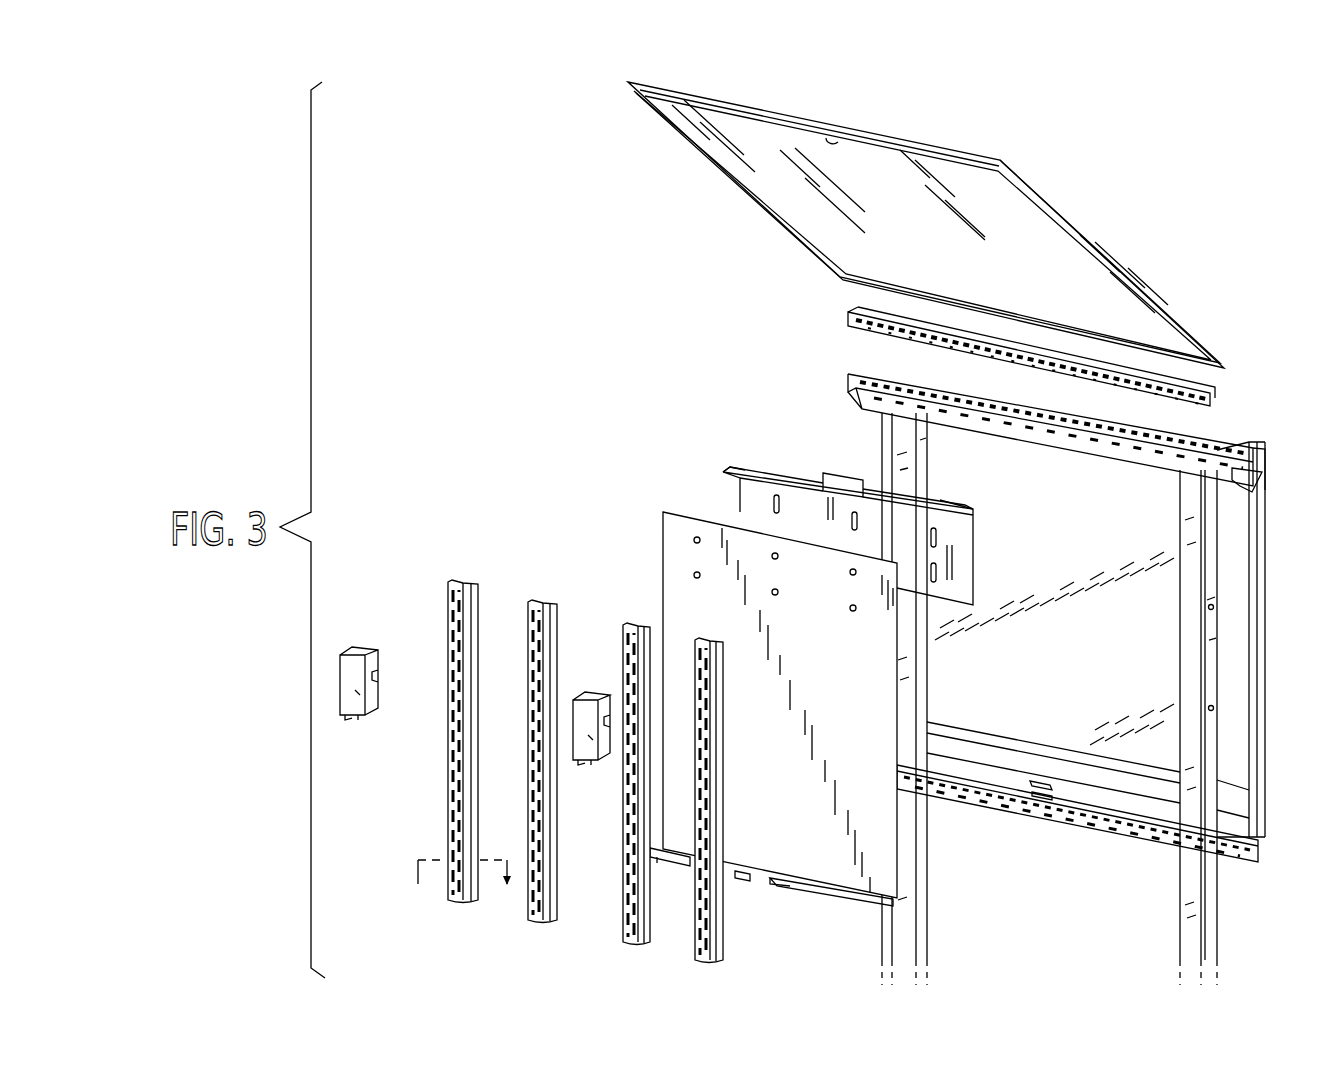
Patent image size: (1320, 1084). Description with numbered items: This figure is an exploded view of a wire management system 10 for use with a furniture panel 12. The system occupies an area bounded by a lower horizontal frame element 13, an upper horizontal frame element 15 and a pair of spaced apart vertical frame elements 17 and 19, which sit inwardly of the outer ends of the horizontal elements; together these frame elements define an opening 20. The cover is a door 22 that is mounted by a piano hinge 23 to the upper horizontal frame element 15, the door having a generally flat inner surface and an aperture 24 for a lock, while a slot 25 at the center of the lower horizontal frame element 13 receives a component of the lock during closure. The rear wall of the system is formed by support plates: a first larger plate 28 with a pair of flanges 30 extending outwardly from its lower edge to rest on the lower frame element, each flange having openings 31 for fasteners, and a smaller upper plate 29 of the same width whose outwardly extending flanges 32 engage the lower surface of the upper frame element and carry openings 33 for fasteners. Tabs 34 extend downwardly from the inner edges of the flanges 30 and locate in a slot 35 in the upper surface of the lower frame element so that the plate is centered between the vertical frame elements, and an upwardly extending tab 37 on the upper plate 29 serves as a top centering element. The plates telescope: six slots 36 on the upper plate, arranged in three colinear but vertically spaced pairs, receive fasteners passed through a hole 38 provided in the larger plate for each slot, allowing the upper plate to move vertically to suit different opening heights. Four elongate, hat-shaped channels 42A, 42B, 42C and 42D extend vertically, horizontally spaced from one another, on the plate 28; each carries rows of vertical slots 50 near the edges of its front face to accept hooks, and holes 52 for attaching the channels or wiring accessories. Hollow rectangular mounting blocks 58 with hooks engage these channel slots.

The wire management system 10 is at (631, 457).
The furniture panel 12 is at (1240, 903).
The lower horizontal frame element 13 is at (1088, 820).
The upper horizontal frame element 15 is at (1083, 455).
The vertical frame element 17 is at (905, 430).
The vertical frame element 19 is at (1200, 575).
The opening 20 is at (1041, 638).
The door 22 is at (906, 228).
The piano hinge 23 is at (1215, 393).
The aperture 24 is at (836, 140).
The slot 25 is at (1036, 794).
The first larger plate 28 is at (838, 721).
The smaller upper plate 29 is at (955, 510).
The flanges 30 is at (683, 856).
The openings 31 is at (815, 886).
The flanges 32 is at (790, 468).
The openings 33 is at (787, 470).
The tabs 34 is at (745, 884).
The slot 35 is at (1042, 778).
The slots 36 is at (772, 503).
The upwardly extending tab 37 is at (845, 478).
The hole 38 is at (694, 575).
The elongate channel 42A is at (455, 575).
The elongate channel 42B is at (540, 595).
The elongate channel 42C is at (635, 618).
The elongate channel 42D is at (710, 633).
The slots 50 is at (532, 737).
The holes 52 is at (458, 632).
The mounting block 58 is at (382, 642).